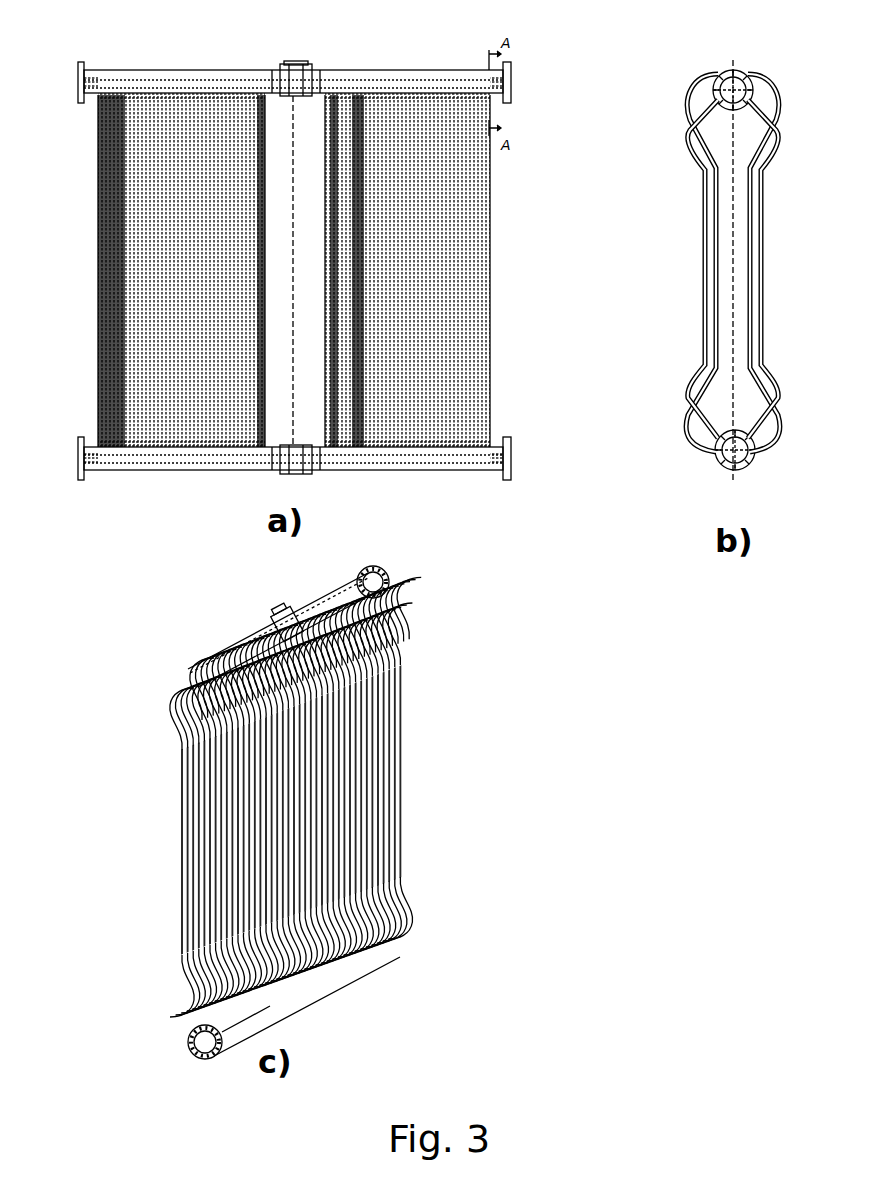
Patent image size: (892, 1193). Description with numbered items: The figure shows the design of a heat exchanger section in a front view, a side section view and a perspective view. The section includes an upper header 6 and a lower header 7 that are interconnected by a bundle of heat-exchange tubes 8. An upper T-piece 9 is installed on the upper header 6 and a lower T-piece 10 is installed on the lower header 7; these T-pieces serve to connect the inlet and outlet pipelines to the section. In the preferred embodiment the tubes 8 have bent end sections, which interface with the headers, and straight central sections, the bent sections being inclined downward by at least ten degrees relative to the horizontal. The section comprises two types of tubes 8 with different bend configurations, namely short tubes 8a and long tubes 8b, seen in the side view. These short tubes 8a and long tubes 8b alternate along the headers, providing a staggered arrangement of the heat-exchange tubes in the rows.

The upper header 6 is at (358, 594).
The lower header 7 is at (484, 465).
The heat-exchange tubes 8 is at (437, 307).
The short tubes 8a is at (686, 108).
The long tubes 8b is at (695, 150).
The upper T-piece 9 is at (301, 71).
The lower T-piece 10 is at (301, 473).